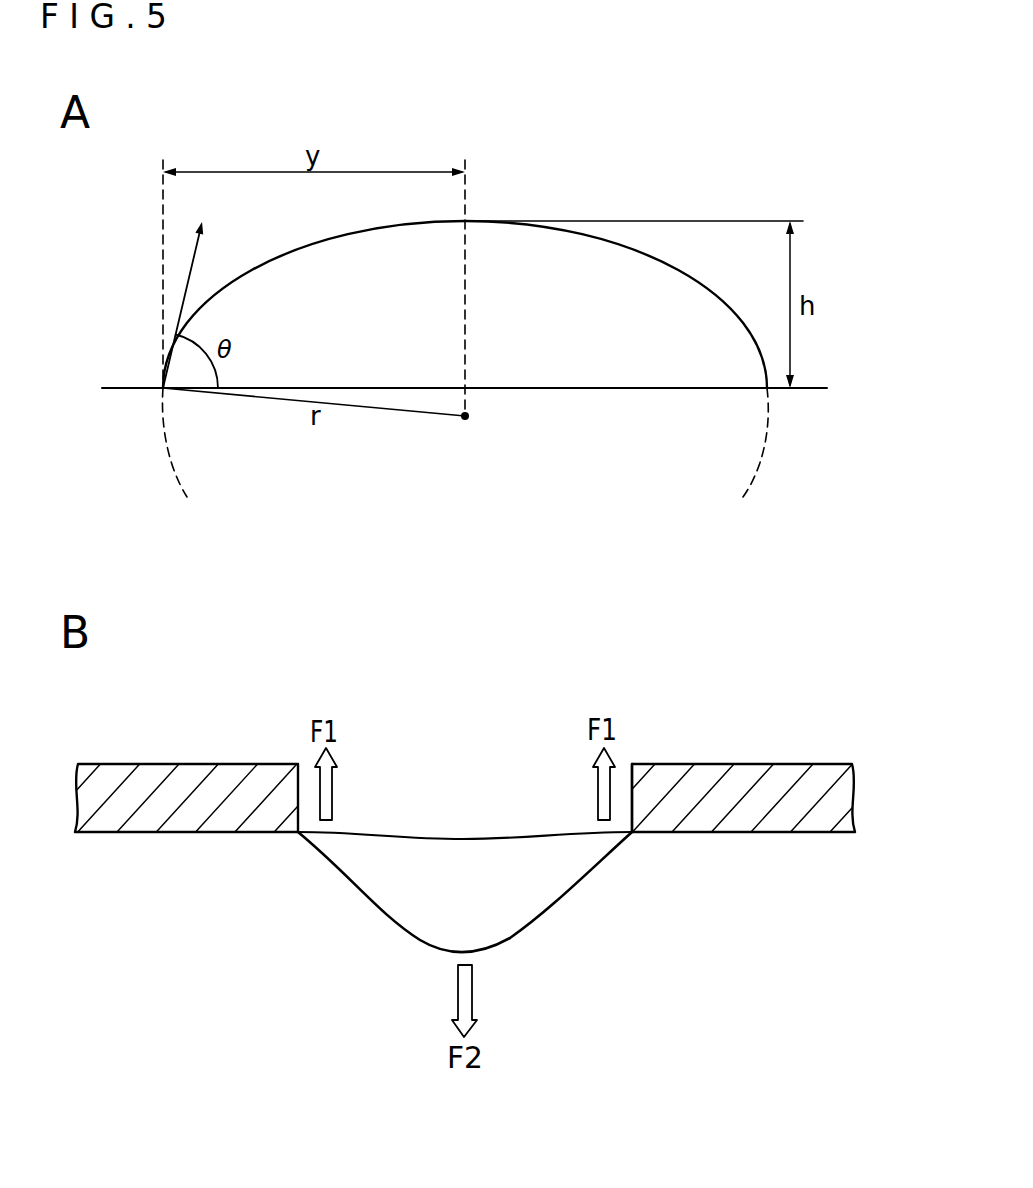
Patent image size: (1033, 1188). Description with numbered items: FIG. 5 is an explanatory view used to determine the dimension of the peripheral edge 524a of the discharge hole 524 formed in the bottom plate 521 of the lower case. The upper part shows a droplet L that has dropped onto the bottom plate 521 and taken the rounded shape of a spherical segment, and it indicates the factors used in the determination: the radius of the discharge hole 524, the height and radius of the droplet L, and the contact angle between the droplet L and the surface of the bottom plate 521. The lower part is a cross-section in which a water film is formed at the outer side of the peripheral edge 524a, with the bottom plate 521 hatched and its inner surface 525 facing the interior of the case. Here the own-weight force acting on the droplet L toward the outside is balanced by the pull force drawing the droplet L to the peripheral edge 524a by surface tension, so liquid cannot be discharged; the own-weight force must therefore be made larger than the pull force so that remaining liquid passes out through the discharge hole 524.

The bottom plate 521 is at (752, 775).
The discharge hole 524 is at (653, 743).
The peripheral edge 524a is at (632, 772).
The inner surface 525 is at (195, 764).
The droplet L is at (548, 885).